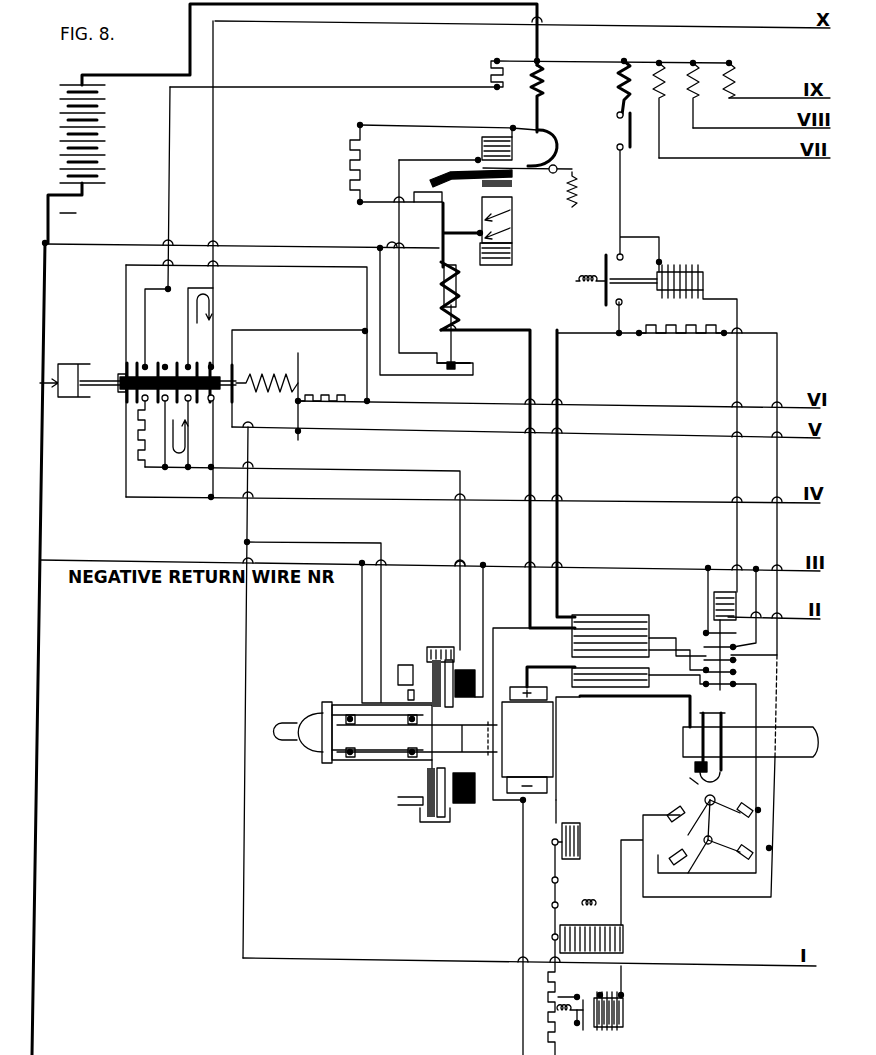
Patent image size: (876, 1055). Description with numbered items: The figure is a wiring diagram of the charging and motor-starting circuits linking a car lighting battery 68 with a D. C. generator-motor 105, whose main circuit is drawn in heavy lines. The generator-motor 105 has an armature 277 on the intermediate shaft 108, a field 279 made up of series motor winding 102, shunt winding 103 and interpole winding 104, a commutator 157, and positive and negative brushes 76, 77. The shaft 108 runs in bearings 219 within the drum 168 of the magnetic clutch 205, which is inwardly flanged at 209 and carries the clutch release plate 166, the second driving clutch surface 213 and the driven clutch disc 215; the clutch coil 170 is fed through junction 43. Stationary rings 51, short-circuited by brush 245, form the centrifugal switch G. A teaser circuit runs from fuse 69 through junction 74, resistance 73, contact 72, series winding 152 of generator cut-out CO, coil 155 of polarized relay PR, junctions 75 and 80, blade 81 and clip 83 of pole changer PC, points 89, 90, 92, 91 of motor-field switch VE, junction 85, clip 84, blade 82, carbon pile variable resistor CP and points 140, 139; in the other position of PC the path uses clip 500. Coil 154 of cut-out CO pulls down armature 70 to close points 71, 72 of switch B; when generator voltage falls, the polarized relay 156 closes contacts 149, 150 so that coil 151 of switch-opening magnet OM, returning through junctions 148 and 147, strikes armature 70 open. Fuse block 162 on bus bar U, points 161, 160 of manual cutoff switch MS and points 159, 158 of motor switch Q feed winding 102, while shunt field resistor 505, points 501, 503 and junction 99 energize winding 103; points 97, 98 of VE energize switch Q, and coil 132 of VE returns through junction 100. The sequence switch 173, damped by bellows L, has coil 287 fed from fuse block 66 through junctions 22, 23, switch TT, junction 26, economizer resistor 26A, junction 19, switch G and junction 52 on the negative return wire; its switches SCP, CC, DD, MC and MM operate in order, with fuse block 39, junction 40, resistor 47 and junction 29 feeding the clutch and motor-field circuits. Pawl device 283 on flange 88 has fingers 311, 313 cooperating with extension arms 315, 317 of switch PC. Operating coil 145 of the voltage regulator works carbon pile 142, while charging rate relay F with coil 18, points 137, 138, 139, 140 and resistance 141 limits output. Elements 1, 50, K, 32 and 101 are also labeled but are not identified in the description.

The car lighting battery 68 is at (105, 135).
The junction 147 is at (48, 245).
The fuse block 39 is at (491, 72).
The fuse 69 is at (541, 82).
The junction 74 is at (512, 127).
The coil of switch-opening magnet 151 is at (484, 148).
The switch-opening magnet OM is at (479, 131).
The resistance 73 is at (352, 160).
The contact point 71 is at (437, 185).
The switch B is at (423, 186).
The contact 72 is at (422, 202).
The cut-out armature 70 is at (548, 172).
The series winding of generator cut-out 152 is at (512, 232).
The generator cut-out CO is at (518, 218).
The coil of generator cut-out 154 is at (512, 258).
The fuse block 162 is at (618, 92).
The point of manual cutoff switch 161 is at (617, 115).
The manual cutoff switch MS is at (639, 155).
The point of manual cutoff switch 160 is at (617, 147).
The point of motor switch 159 is at (619, 255).
The bus bar U is at (656, 56).
The fuse block 66 is at (696, 64).
The resistor 1 is at (736, 76).
The junction 148 is at (374, 242).
The polarized relay PR is at (433, 287).
The coil of polarized relay 155 is at (458, 280).
The polarized relay 156 is at (479, 299).
The contact of polarized relay 150 is at (442, 357).
The contact of polarized relay 149 is at (457, 352).
The motor switch Q is at (723, 275).
The point of motor switch 158 is at (621, 310).
The shunt field resistor 505 is at (688, 338).
The junction 40 is at (166, 289).
The junction 29 is at (215, 291).
The sequence switch 173 is at (243, 312).
The shaft 50 is at (72, 364).
The bellows L is at (67, 409).
The switch SCP is at (127, 358).
The switch CC is at (146, 358).
The switch DD is at (162, 358).
The switch MC is at (182, 358).
The switch TT is at (241, 360).
The coil of sequence switch 287 is at (298, 378).
The junction 26 is at (298, 438).
The economizer resistor 26A is at (345, 405).
The junction 22 is at (370, 401).
The junction 23 is at (363, 330).
The switch MM is at (209, 408).
The resistor K is at (133, 427).
The resistance 47 is at (138, 445).
The conductor 32 is at (208, 500).
The junction 19 is at (246, 542).
The junction 52 is at (356, 558).
The magnetic clutch 205 is at (356, 644).
The intermediate shaft 108 is at (345, 742).
The bearings 219 is at (405, 724).
The drum 168 is at (430, 650).
The clutch release plate 166 is at (446, 660).
The junction 43 is at (465, 670).
The brush 245 is at (400, 668).
The stationary rings 51 is at (405, 690).
The centrifugal switch G is at (385, 687).
The coil of clutch 170 is at (462, 735).
The second driving clutch surface 213 is at (427, 780).
The driven clutch disc 215 is at (423, 806).
The inward flange of drum 209 is at (452, 824).
The commutator 157 is at (527, 739).
The positive brush 76 is at (515, 687).
The negative brush 77 is at (528, 784).
The junction 75 is at (527, 623).
The shunt generator and motor winding 103 is at (566, 650).
The series motor winding 102 is at (655, 630).
The field 279 is at (631, 609).
The interpole series winding 104 is at (676, 670).
The armature 277 is at (632, 746).
The coil of motor-field switch 132 is at (740, 610).
The motor-field switch VE is at (703, 594).
The points of motor-field switch 503 is at (704, 633).
The point of motor-field switch 98 is at (706, 632).
The conductor 101 is at (706, 566).
The junction 100 is at (735, 590).
The junction 99 is at (756, 566).
The point of motor-field switch 97 is at (736, 647).
The points of motor-field switch 501 is at (737, 660).
The point of motor-field switch 91 is at (737, 672).
The point of motor-field switch 92 is at (705, 668).
The point of motor-field switch 90 is at (706, 687).
The point of motor-field switch 89 is at (734, 687).
The flange 88 is at (700, 727).
The finger 311 is at (725, 745).
The pawl device 283 is at (700, 750).
The finger 313 is at (695, 768).
The extension arm 317 is at (690, 784).
The extension arm 315 is at (722, 780).
The pole changer switch PC is at (708, 908).
The blade of pole changer 81 is at (712, 821).
The blade of pole changer 82 is at (707, 859).
The clip of pole changer 83 is at (760, 812).
The clip of pole changer 84 is at (733, 863).
The junction of pole changer 85 is at (771, 850).
The clip of pole changer 500 is at (666, 835).
The D. C. generator-motor 105 is at (622, 860).
The junction 80 is at (585, 812).
The operating coil of voltage regulator 145 is at (590, 860).
The carbon pile 142 is at (615, 913).
The carbon pile variable resistor CP is at (607, 943).
The resistance 141 is at (548, 992).
The point 140 is at (548, 1005).
The charging rate relay F is at (636, 1015).
The point 139 is at (585, 1028).
The point 138 is at (603, 993).
The point 137 is at (624, 996).
The coil of charging rate relay 18 is at (612, 1028).